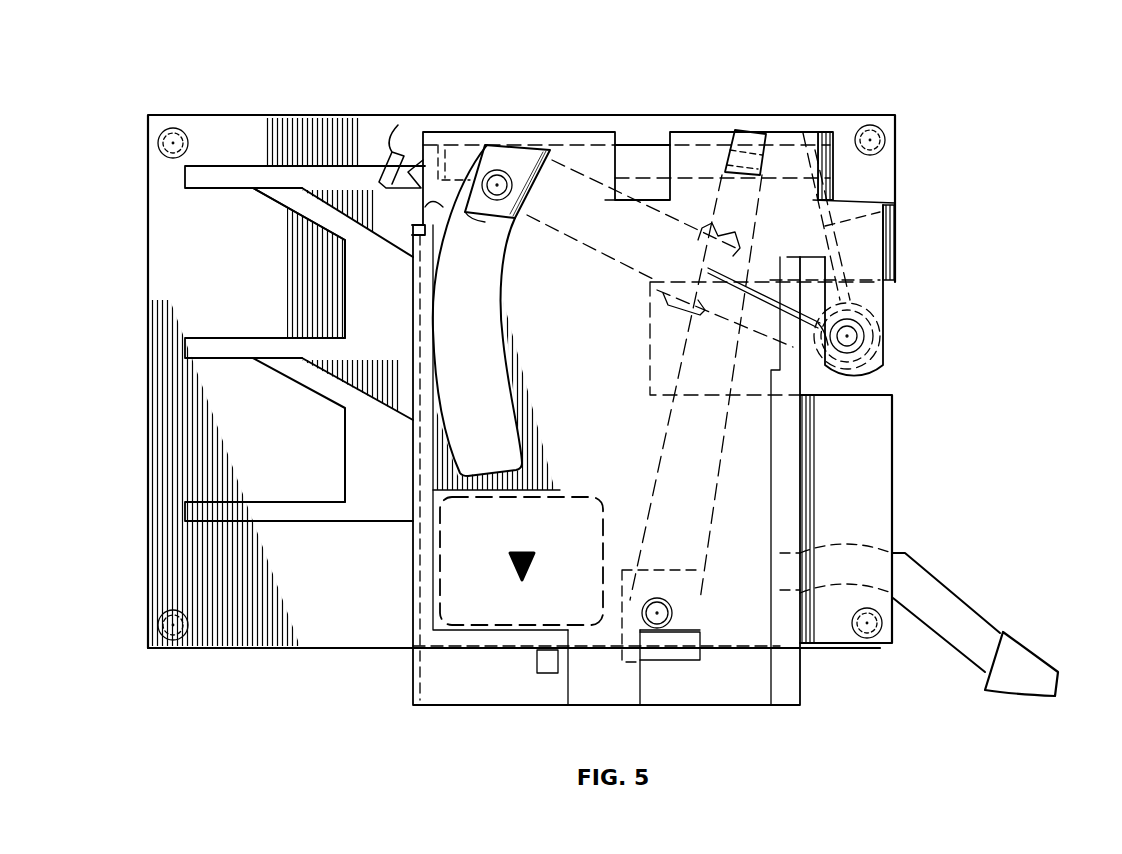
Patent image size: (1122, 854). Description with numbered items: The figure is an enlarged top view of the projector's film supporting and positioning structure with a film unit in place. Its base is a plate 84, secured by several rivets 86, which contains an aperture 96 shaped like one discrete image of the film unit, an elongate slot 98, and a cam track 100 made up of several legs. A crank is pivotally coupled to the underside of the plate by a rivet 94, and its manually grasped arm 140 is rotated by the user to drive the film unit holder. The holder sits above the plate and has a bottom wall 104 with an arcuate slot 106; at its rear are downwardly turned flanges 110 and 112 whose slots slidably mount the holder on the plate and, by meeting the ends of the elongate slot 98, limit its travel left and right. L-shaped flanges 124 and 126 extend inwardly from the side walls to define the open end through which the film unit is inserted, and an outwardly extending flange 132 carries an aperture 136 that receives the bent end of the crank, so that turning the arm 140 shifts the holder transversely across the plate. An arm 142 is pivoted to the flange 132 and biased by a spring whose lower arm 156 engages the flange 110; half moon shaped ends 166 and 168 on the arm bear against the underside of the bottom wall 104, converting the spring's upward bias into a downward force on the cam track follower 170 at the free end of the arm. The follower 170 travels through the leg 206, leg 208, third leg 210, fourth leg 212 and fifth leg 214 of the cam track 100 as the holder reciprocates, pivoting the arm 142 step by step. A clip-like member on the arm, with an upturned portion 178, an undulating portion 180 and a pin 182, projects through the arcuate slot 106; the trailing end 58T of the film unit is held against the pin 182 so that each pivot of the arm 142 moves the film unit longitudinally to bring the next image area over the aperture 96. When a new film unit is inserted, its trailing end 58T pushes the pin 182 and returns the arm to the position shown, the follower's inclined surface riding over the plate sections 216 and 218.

The trailing end of the film unit 58T is at (426, 206).
The plate 84 is at (357, 650).
The rivets 86 is at (170, 134).
The rivet 94 is at (665, 622).
The aperture 96 is at (565, 497).
The elongate slot 98 is at (645, 146).
The cam track 100 is at (200, 386).
The bottom wall 104 is at (570, 400).
The arcuate slot 106 is at (500, 306).
The flange 110 is at (822, 133).
The flange 112 is at (617, 135).
The L-shaped flange 124 is at (700, 706).
The L-shaped flange 126 is at (440, 693).
The outwardly extending flange 132 is at (882, 265).
The aperture 136 is at (740, 148).
The arm of the crank 140 is at (1010, 648).
The arm 142 is at (677, 253).
The lower arm of the spring 156 is at (896, 207).
The half moon shaped end 166 is at (728, 216).
The half moon shaped end 168 is at (650, 322).
The cam track follower 170 is at (398, 124).
The upturned portion 178 is at (548, 154).
The undulating portion 180 is at (500, 226).
The pin 182 is at (514, 192).
The leg of the cam track 206 is at (302, 168).
The leg of the cam track 208 is at (296, 208).
The third leg 210 is at (283, 338).
The fourth leg 212 is at (300, 380).
The fifth leg 214 is at (364, 520).
The section of the plate 216 is at (390, 402).
The section of the plate 218 is at (393, 232).